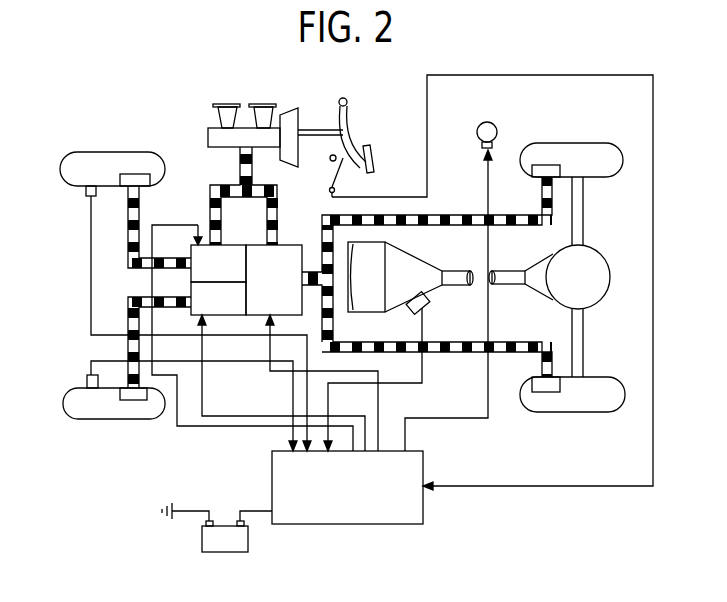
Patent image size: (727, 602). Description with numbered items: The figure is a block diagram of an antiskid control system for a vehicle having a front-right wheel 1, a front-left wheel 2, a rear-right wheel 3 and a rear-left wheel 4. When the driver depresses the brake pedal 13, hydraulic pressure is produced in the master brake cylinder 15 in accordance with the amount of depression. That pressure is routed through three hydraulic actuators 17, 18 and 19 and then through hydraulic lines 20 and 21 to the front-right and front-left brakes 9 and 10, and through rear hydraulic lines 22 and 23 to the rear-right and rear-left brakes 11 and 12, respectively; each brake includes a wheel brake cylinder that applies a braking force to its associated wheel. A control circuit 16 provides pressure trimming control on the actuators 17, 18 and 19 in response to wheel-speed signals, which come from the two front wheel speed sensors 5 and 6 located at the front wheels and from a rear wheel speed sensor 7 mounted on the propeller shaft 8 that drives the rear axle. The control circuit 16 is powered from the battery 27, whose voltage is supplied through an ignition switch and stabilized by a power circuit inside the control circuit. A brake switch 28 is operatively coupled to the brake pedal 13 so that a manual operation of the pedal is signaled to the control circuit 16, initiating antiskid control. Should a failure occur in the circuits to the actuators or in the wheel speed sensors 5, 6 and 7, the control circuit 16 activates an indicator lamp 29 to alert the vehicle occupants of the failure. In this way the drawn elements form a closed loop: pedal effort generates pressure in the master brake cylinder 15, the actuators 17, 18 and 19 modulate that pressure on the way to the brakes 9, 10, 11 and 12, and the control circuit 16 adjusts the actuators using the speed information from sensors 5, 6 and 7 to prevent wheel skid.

The front-right wheel 1 is at (110, 152).
The front-left wheel 2 is at (102, 419).
The rear-right wheel 3 is at (590, 143).
The rear-left wheel 4 is at (580, 412).
The front wheel speed sensor 5 is at (88, 196).
The front wheel speed sensor 6 is at (87, 378).
The rear wheel speed sensor 7 is at (426, 306).
The propeller shaft 8 is at (466, 270).
The front-right brake 9 is at (140, 174).
The front-left brake 10 is at (140, 400).
The rear-right brake 11 is at (546, 165).
The rear-left brake 12 is at (553, 392).
The brake pedal 13 is at (356, 142).
The master brake cylinder 15 is at (212, 128).
The control circuit 16 is at (338, 526).
The hydraulic actuator 17 is at (218, 263).
The hydraulic actuator 18 is at (218, 298).
The hydraulic actuator 19 is at (274, 280).
The hydraulic line 20 is at (128, 230).
The hydraulic line 21 is at (128, 318).
The rear hydraulic line 22 is at (530, 213).
The rear hydraulic line 23 is at (538, 340).
The battery 27 is at (230, 553).
The brake switch 28 is at (330, 170).
The indicator lamp 29 is at (487, 122).